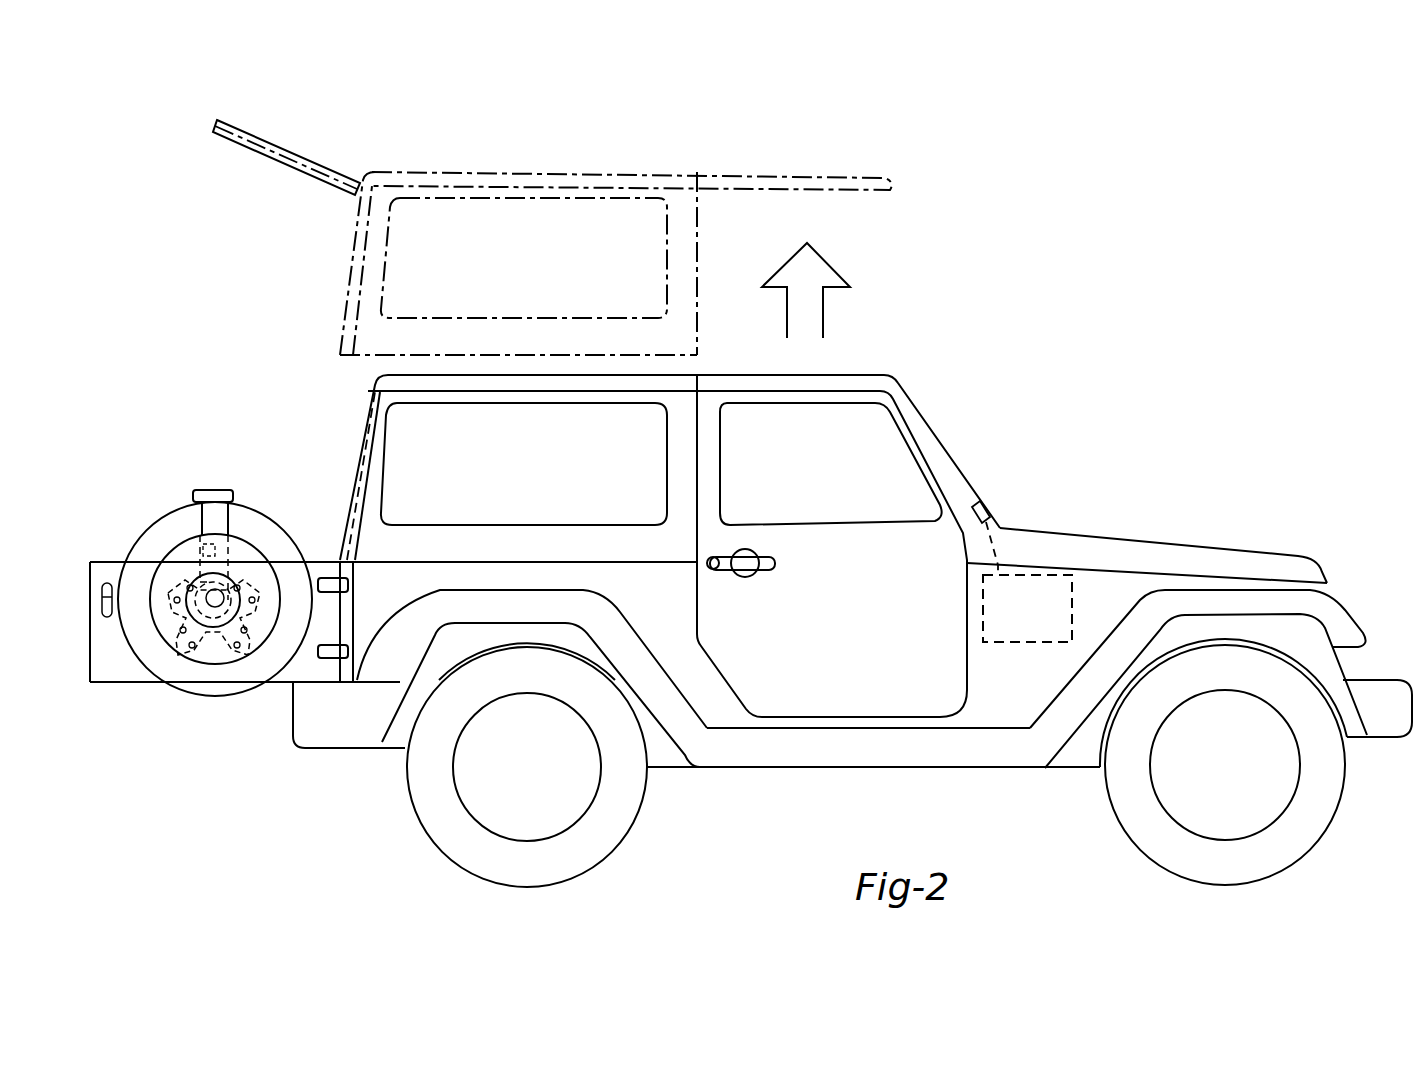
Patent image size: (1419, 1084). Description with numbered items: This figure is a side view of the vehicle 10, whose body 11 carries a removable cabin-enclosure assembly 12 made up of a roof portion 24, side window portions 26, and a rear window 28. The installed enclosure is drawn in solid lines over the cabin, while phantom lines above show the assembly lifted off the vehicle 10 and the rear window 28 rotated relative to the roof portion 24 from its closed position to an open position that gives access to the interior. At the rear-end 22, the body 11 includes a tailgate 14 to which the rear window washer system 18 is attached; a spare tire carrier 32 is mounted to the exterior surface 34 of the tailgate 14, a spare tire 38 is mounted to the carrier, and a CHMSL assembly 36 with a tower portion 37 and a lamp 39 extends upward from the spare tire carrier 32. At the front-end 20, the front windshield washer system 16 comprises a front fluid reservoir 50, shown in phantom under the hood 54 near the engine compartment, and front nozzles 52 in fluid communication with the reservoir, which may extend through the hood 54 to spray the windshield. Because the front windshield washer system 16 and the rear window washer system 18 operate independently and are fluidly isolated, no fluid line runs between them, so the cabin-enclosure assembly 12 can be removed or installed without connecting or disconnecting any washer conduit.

The vehicle 10 is at (945, 357).
The body 11 is at (700, 690).
The removable cabin-enclosure assembly 12 is at (552, 324).
The tailgate 14 is at (245, 610).
The front windshield washer system 16 is at (976, 644).
The rear window washer system 18 is at (215, 630).
The front-end 20 is at (1163, 524).
The rear-end 22 is at (293, 686).
The roof portion 24 is at (525, 165).
The side window portions 26 is at (690, 222).
The rear window 28 is at (285, 165).
The spare tire carrier 32 is at (240, 657).
The exterior surface 34 is at (118, 684).
The CHMSL assembly 36 is at (199, 470).
The tower portion 37 is at (225, 525).
The spare tire 38 is at (157, 525).
The lamp 39 is at (218, 490).
The front fluid reservoir 50 is at (998, 644).
The front nozzles 52 is at (975, 505).
The hood 54 is at (1095, 530).